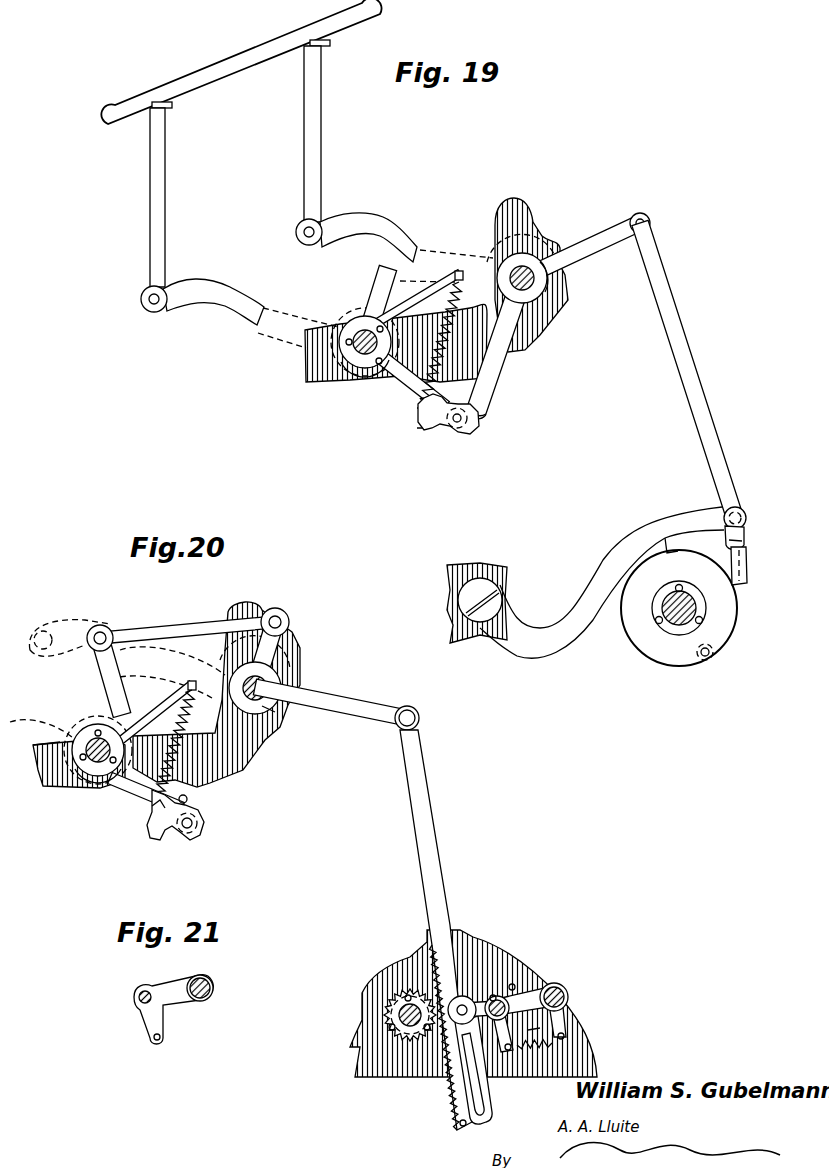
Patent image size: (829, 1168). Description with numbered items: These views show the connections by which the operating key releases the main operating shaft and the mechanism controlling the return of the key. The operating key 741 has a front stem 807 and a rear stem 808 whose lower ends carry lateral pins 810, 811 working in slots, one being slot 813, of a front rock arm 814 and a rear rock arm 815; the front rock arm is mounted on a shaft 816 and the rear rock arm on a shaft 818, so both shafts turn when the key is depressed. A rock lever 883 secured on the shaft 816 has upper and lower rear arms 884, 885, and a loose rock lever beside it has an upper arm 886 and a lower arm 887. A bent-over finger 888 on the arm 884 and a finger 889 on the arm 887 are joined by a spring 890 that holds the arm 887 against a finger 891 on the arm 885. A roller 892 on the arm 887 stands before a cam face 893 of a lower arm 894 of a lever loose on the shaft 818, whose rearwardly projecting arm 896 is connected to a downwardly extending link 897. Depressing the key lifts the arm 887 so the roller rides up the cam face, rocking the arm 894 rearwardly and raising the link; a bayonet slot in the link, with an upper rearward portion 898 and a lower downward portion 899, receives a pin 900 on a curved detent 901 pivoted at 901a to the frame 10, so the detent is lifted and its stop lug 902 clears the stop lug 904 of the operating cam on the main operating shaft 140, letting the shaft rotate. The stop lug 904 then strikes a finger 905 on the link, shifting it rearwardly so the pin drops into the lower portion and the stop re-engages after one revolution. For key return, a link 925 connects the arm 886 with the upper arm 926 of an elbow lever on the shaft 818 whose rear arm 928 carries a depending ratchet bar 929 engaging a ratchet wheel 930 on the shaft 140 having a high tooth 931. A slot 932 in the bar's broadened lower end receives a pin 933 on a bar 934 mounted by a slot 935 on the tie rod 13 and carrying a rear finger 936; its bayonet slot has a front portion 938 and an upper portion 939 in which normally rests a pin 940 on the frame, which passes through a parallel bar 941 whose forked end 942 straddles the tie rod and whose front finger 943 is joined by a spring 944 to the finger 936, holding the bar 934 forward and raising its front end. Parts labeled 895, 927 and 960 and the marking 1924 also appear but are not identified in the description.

In FIG. 19, the frame 10 is at (310, 356).
In FIG. 20, the frame 10 is at (257, 742).
In FIG. 20, the tie rod 13 is at (566, 999).
In FIG. 21, the tie rod 13 is at (209, 994).
In FIG. 19, the main operating shaft 140 is at (700, 607).
In FIG. 20, the main operating shaft 140 is at (399, 1015).
In FIG. 19, the operating key 741 is at (229, 68).
In FIG. 19, the front stem 807 is at (158, 147).
In FIG. 19, the rear stem 808 is at (312, 151).
In FIG. 19, the lateral pin 810 is at (165, 290).
In FIG. 19, the lateral pin 811 is at (296, 233).
In FIG. 20, the slot 813 is at (58, 633).
In FIG. 19, the front rock arm 814 is at (223, 288).
In FIG. 20, the front rock arm 814 is at (30, 750).
In FIG. 19, the rear rock arm 815 is at (368, 230).
In FIG. 20, the rear rock arm 815 is at (88, 624).
In FIG. 19, the shaft 816 is at (364, 331).
In FIG. 20, the shaft 816 is at (98, 737).
In FIG. 19, the shaft 818 is at (531, 288).
In FIG. 20, the shaft 818 is at (268, 683).
In FIG. 19, the rock lever 883 is at (365, 369).
In FIG. 20, the rock lever 883 is at (118, 773).
In FIG. 19, the upper rear arm 884 is at (443, 278).
In FIG. 20, the upper rear arm 884 is at (165, 690).
In FIG. 19, the lower rear arm 885 is at (417, 387).
In FIG. 20, the lower rear arm 885 is at (143, 792).
In FIG. 19, the upper arm 886 is at (385, 277).
In FIG. 20, the upper arm 886 is at (110, 677).
In FIG. 19, the lower arm 887 is at (440, 430).
In FIG. 20, the lower arm 887 is at (198, 813).
In FIG. 19, the bent-over finger 888 is at (461, 270).
In FIG. 20, the bent-over finger 888 is at (193, 681).
In FIG. 19, the finger 889 is at (416, 419).
In FIG. 20, the finger 889 is at (153, 823).
In FIG. 19, the spring 890 is at (452, 310).
In FIG. 20, the spring 890 is at (184, 715).
In FIG. 20, the finger 891 is at (188, 798).
In FIG. 19, the roller 892 is at (450, 430).
In FIG. 20, the roller 892 is at (200, 827).
In FIG. 19, the cam face 893 is at (474, 395).
In FIG. 19, the lower arm 894 is at (498, 362).
In FIG. 19, the hub 895 is at (560, 287).
In FIG. 19, the arm 896 is at (606, 246).
In FIG. 19, the link 897 is at (661, 312).
In FIG. 19, the upper slot portion 898 is at (747, 517).
In FIG. 19, the lower slot portion 899 is at (742, 544).
In FIG. 19, the pin 900 is at (745, 531).
In FIG. 19, the curved rock arm 901 is at (601, 582).
In FIG. 19, the pivot 901a is at (478, 587).
In FIG. 19, the stop lug 902 is at (672, 537).
In FIG. 19, the stop lug 904 is at (653, 560).
In FIG. 19, the finger 905 is at (747, 580).
In FIG. 20, the link 925 is at (183, 630).
In FIG. 20, the upper arm 926 is at (281, 630).
In FIG. 20, the arm 927 is at (270, 710).
In FIG. 20, the rear arm 928 is at (336, 704).
In FIG. 20, the ratchet bar 929 is at (426, 807).
In FIG. 20, the ratchet wheel 930 is at (425, 1037).
In FIG. 20, the high tooth 931 is at (433, 1040).
In FIG. 20, the slot 932 is at (477, 1092).
In FIG. 20, the pin 933 is at (465, 1003).
In FIG. 20, the bar 934 is at (517, 1000).
In FIG. 20, the slot 935 is at (548, 985).
In FIG. 20, the rear finger 936 is at (564, 1023).
In FIG. 20, the front slot portion 938 is at (493, 995).
In FIG. 20, the upper slot portion 939 is at (513, 984).
In FIG. 20, the pin 940 is at (509, 1006).
In FIG. 21, the pin 940 is at (141, 995).
In FIG. 21, the bar 941 is at (168, 988).
In FIG. 20, the forked end 942 is at (567, 994).
In FIG. 21, the forked end 942 is at (209, 977).
In FIG. 20, the front finger 943 is at (522, 1033).
In FIG. 21, the front finger 943 is at (152, 1017).
In FIG. 20, the spring 944 is at (535, 1035).
In FIG. 19, the pivot 960 is at (716, 650).
In FIG. 20, the pin 1924 is at (464, 1127).